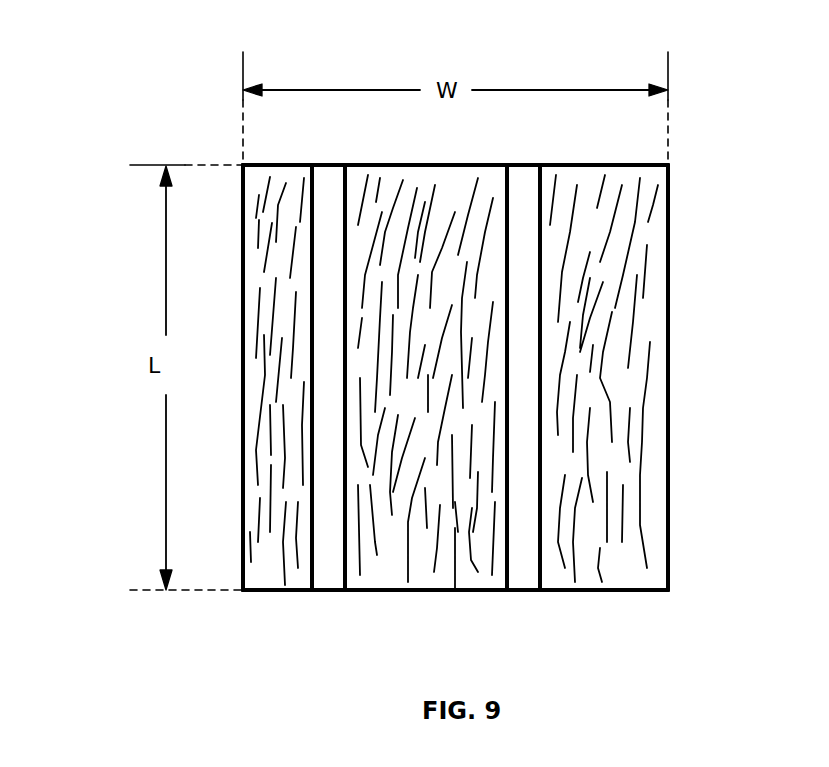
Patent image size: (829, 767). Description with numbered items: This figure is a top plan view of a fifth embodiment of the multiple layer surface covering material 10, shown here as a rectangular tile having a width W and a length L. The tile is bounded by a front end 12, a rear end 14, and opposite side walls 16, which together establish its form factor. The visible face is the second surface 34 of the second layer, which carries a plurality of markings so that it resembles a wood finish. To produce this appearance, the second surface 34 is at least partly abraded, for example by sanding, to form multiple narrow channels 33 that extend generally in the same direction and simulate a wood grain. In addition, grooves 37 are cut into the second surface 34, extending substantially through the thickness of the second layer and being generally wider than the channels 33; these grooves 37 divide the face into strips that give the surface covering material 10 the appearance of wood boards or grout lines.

The surface covering material 10 is at (118, 63).
The front end 12 is at (428, 590).
The rear end 14 is at (447, 164).
The side walls 16 is at (242, 354).
The channels 33 is at (413, 200).
The second surface 34 is at (276, 525).
The grooves 37 is at (323, 575).